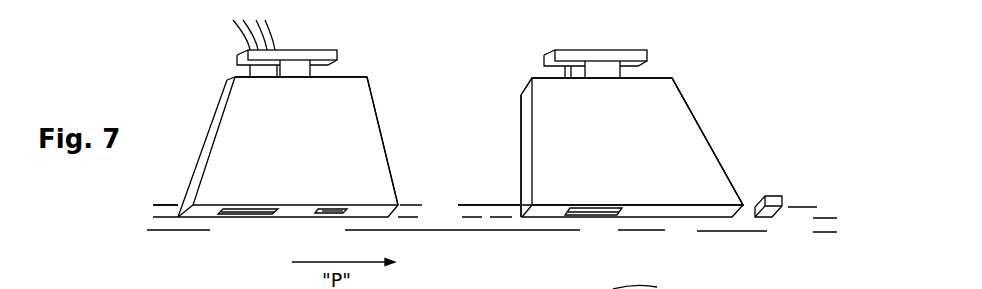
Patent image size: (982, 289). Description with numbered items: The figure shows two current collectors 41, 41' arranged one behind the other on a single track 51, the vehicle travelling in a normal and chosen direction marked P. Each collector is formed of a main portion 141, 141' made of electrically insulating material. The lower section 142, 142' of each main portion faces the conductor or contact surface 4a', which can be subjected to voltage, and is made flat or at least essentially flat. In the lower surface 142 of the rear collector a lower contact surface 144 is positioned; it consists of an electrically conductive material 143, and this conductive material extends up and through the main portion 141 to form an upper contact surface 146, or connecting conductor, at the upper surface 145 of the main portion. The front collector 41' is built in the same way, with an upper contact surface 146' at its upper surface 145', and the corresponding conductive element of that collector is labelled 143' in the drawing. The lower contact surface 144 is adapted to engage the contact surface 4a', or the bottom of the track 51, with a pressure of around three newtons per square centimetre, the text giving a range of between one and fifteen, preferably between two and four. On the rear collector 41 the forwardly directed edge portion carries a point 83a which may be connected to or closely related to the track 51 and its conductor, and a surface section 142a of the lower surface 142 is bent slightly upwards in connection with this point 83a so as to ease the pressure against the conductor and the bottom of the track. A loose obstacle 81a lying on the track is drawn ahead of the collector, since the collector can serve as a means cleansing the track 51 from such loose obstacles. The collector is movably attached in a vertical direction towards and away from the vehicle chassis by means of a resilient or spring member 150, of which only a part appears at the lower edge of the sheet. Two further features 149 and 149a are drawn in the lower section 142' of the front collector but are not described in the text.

The main portion 141' is at (288, 147).
The lower section 142' is at (288, 235).
The slot in base plate 149 is at (230, 214).
The small slot in base plate 149a is at (328, 213).
The upper surface 145' is at (330, 50).
The upper contact surface 146' is at (231, 50).
The current collector 41' is at (391, 141).
The top surface of guide block 143' is at (342, 132).
The main portion 141 is at (632, 147).
The lower section 142 is at (632, 232).
The surface section 142a is at (540, 77).
The lower contact surface 144 is at (592, 212).
The upper surface 145 is at (638, 57).
The upper contact surface 146 is at (599, 44).
The current collector 41 is at (705, 140).
The electrically conductive material 143 is at (654, 125).
The point 83a is at (637, 141).
The loose obstacle 81a is at (768, 197).
The contact surface 4a' is at (492, 218).
The track 51 is at (137, 215).
The resilient or spring member 150 is at (617, 285).